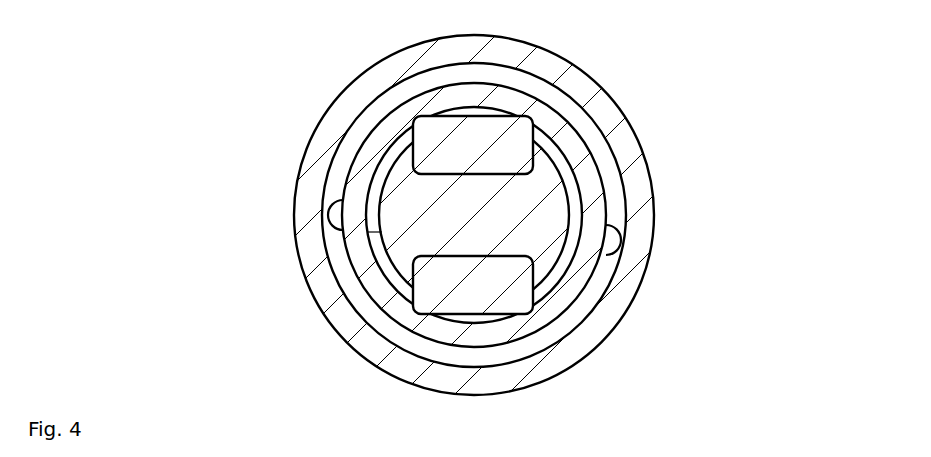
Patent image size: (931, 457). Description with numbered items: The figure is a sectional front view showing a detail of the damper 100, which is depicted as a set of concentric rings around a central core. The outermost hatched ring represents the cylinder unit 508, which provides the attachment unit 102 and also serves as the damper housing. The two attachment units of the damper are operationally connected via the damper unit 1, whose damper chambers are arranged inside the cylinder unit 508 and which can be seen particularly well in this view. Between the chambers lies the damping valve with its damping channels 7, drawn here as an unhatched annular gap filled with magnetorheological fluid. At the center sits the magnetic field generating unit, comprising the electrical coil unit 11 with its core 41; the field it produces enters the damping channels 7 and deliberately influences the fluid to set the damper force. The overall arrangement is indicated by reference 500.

The assembly 500 is at (104, 58).
The damper 100 is at (694, 90).
The attachment unit 102 is at (328, 97).
The damping channel 7 is at (377, 118).
The cylinder unit 508 is at (305, 150).
The damper unit 1 is at (260, 199).
The core 41 is at (410, 232).
The electrical coil unit 11 is at (428, 283).